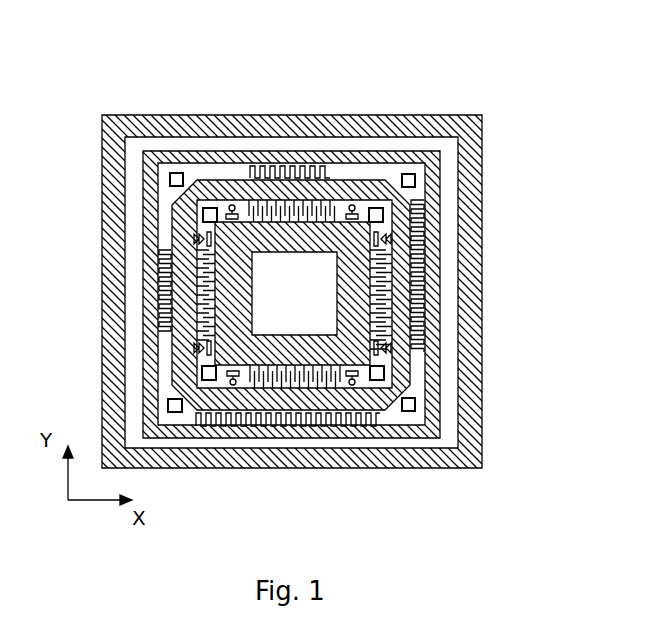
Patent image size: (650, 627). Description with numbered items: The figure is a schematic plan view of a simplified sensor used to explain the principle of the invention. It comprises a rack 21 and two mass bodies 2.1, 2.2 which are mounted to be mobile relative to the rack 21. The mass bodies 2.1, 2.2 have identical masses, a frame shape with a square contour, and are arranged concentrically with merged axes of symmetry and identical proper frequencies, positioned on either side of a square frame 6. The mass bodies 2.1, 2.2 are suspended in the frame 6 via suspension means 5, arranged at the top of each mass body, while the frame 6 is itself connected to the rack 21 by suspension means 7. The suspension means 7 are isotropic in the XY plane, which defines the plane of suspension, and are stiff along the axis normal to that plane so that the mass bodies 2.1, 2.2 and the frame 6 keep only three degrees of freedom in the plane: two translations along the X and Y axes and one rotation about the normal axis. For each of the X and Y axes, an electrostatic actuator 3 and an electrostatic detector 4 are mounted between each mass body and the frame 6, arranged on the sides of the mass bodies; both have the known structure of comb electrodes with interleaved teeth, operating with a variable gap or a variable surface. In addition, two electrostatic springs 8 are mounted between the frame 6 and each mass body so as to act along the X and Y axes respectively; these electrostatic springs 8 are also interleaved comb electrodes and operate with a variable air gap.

The rack 21 is at (470, 115).
The mass body 2.1 is at (398, 292).
The mass body 2.2 is at (435, 328).
The electrostatic actuator 3 is at (380, 350).
The electrostatic detector 4 is at (400, 146).
The suspension means 5 is at (417, 205).
The frame 6 is at (183, 294).
The suspension means 7 is at (205, 376).
The electrostatic spring 8 is at (355, 220).